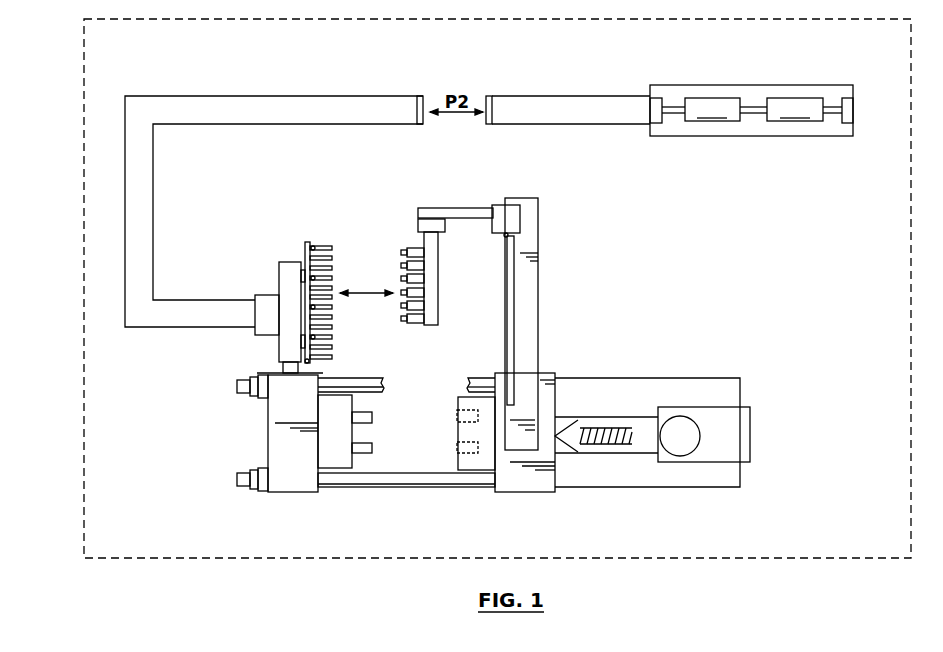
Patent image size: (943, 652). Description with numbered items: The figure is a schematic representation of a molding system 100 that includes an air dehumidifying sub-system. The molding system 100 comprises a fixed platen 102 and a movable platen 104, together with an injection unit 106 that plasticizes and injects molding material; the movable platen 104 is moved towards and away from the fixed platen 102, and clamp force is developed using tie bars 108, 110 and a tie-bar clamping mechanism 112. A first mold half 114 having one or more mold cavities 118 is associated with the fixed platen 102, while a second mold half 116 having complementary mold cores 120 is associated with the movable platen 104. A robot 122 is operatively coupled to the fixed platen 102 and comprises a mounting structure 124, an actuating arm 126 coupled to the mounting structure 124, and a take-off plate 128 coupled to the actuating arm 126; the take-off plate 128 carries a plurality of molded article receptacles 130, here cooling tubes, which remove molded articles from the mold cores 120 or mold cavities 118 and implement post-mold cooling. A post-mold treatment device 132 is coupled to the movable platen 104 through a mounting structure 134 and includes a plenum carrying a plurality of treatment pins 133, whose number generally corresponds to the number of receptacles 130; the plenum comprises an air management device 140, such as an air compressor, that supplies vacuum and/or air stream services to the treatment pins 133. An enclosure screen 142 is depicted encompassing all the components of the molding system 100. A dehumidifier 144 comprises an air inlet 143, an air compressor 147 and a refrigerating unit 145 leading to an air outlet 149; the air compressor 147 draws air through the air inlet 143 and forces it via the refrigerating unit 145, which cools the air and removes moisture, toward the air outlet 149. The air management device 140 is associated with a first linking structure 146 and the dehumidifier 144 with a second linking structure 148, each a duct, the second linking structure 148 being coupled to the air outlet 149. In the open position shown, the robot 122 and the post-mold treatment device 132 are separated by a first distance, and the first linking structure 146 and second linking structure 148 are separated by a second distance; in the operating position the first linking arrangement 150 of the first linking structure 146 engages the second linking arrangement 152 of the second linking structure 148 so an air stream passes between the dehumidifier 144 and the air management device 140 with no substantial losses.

The molding system 100 is at (683, 300).
The fixed platen 102 is at (520, 482).
The movable platen 104 is at (287, 483).
The injection unit 106 is at (622, 480).
The tie bar 108 is at (370, 380).
The tie bar 110 is at (422, 485).
The tie-bar clamping mechanism 112 is at (263, 393).
The first mold half 114 is at (487, 462).
The second mold half 116 is at (333, 460).
The mold cavities 118 is at (458, 447).
The mold cores 120 is at (373, 443).
The robot 122 is at (432, 199).
The mounting structure 124 is at (538, 298).
The actuating arm 126 is at (464, 208).
The take-off plate 128 is at (434, 282).
The molded article receptacles 130 is at (412, 249).
The post-mold treatment device 132 is at (246, 253).
The treatment pins 133 is at (322, 246).
The mounting structure 134 is at (283, 370).
The air management device 140 is at (255, 307).
The enclosure screen 142 is at (84, 310).
The air inlet 143 is at (848, 110).
The dehumidifier 144 is at (797, 85).
The refrigerating unit 145 is at (712, 109).
The first linking structure 146 is at (322, 96).
The air compressor 147 is at (795, 109).
The second linking structure 148 is at (580, 95).
The air outlet 149 is at (656, 100).
The first linking arrangement 150 is at (420, 95).
The second linking arrangement 152 is at (490, 95).